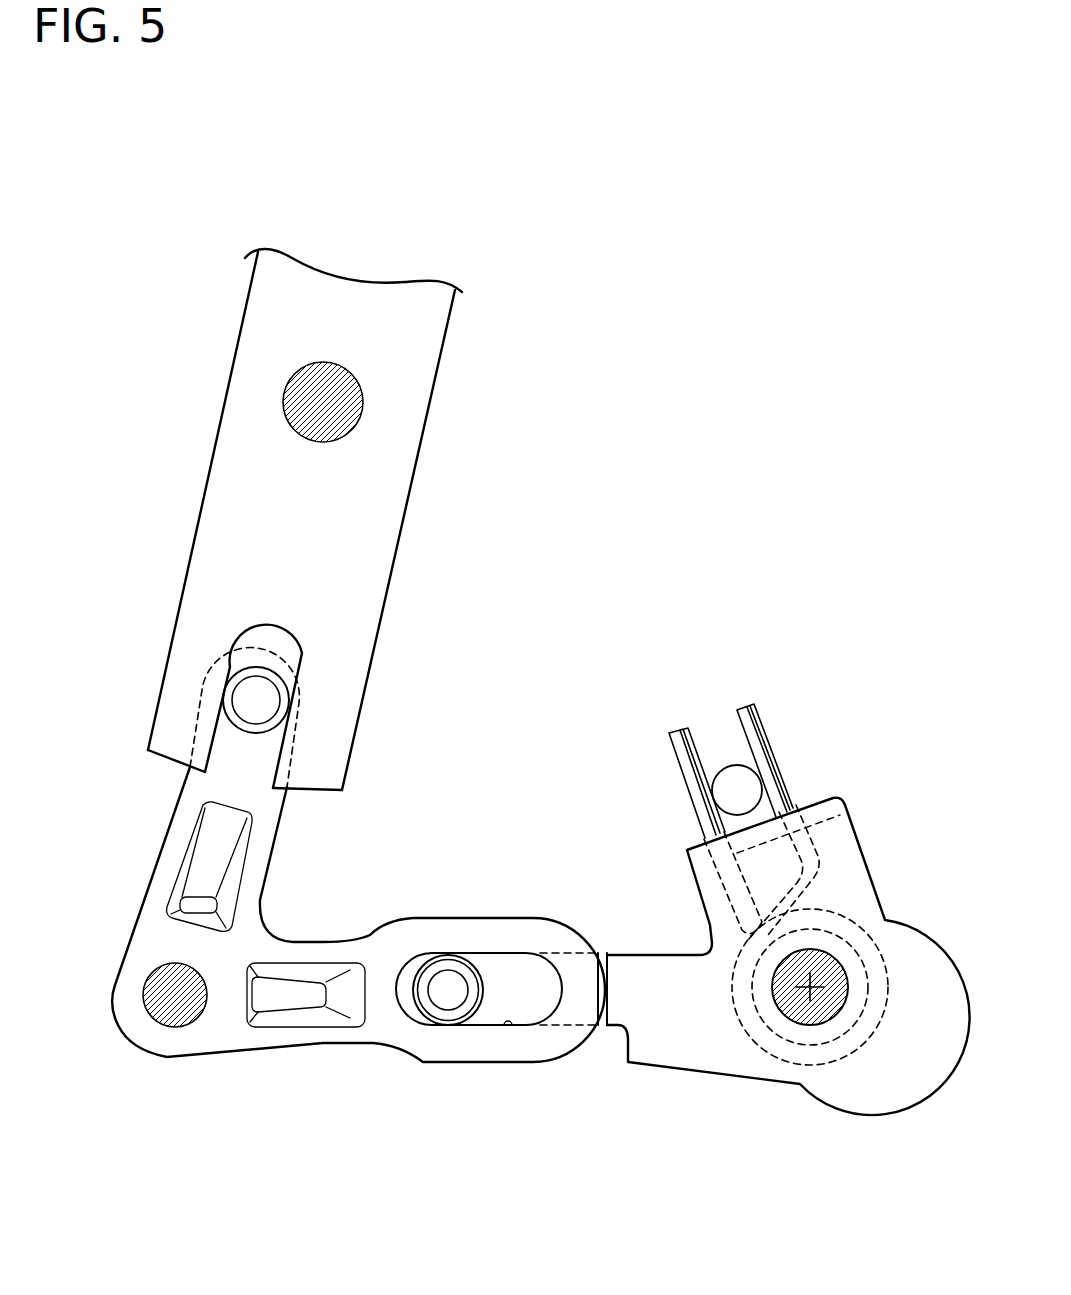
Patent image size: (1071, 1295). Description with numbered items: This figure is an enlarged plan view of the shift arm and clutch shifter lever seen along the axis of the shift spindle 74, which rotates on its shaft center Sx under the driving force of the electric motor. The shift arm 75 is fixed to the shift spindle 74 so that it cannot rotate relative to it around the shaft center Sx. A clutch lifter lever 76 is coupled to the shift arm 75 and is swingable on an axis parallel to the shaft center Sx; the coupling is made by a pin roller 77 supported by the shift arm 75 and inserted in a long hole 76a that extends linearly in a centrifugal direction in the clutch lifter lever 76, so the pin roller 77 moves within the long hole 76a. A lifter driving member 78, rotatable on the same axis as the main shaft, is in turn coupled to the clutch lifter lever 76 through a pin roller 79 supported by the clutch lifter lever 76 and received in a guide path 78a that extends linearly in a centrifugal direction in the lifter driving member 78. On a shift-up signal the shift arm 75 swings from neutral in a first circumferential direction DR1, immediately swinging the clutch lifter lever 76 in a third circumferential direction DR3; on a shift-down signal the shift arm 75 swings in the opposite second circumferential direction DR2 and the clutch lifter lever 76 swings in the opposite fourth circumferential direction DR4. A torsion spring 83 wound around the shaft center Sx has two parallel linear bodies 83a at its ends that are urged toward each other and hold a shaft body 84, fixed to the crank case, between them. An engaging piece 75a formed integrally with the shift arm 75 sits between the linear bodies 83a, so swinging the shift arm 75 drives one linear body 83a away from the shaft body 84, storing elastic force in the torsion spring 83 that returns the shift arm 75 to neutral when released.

The shift spindle 74 is at (827, 990).
The shift arm 75 is at (865, 902).
The engaging piece 75a is at (842, 805).
The clutch lifter lever 76 is at (328, 948).
The long hole 76a is at (508, 1026).
The pin roller 77 is at (420, 967).
The lifter driving member 78 is at (372, 598).
The guide path 78a is at (218, 725).
The pin roller 79 is at (283, 687).
The torsion spring 83 is at (863, 1043).
The linear body 83a is at (688, 790).
The shaft body 84 is at (740, 783).
The first circumferential direction DR1 is at (453, 1040).
The second circumferential direction DR2 is at (450, 940).
The third circumferential direction DR3 is at (568, 1057).
The fourth circumferential direction DR4 is at (567, 922).
The shaft center Sx is at (787, 1013).